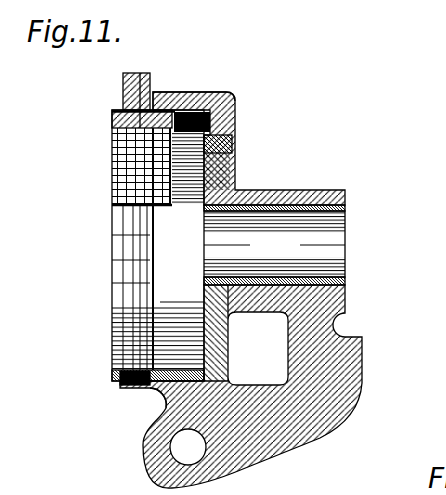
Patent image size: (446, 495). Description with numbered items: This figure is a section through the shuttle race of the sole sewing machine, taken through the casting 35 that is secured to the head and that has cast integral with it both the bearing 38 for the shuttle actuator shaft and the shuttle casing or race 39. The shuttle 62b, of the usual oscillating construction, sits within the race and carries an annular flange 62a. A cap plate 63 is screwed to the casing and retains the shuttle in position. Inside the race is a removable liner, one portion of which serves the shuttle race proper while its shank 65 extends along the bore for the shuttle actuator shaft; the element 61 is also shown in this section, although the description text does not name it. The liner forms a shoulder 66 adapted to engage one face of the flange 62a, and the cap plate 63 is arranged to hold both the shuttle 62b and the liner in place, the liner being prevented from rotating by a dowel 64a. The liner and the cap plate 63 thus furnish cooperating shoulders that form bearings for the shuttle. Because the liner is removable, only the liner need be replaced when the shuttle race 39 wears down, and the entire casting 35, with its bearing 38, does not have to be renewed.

The casting 35 is at (340, 378).
The bearing 38 is at (287, 192).
The shuttle race 39 is at (233, 90).
The inner block 61 is at (161, 245).
The annular flange 62a is at (156, 90).
The shuttle 62b is at (180, 93).
The cap plate 63 is at (125, 90).
The dowel 64a is at (230, 143).
The shank 65 is at (320, 257).
The shoulder 66 is at (148, 388).